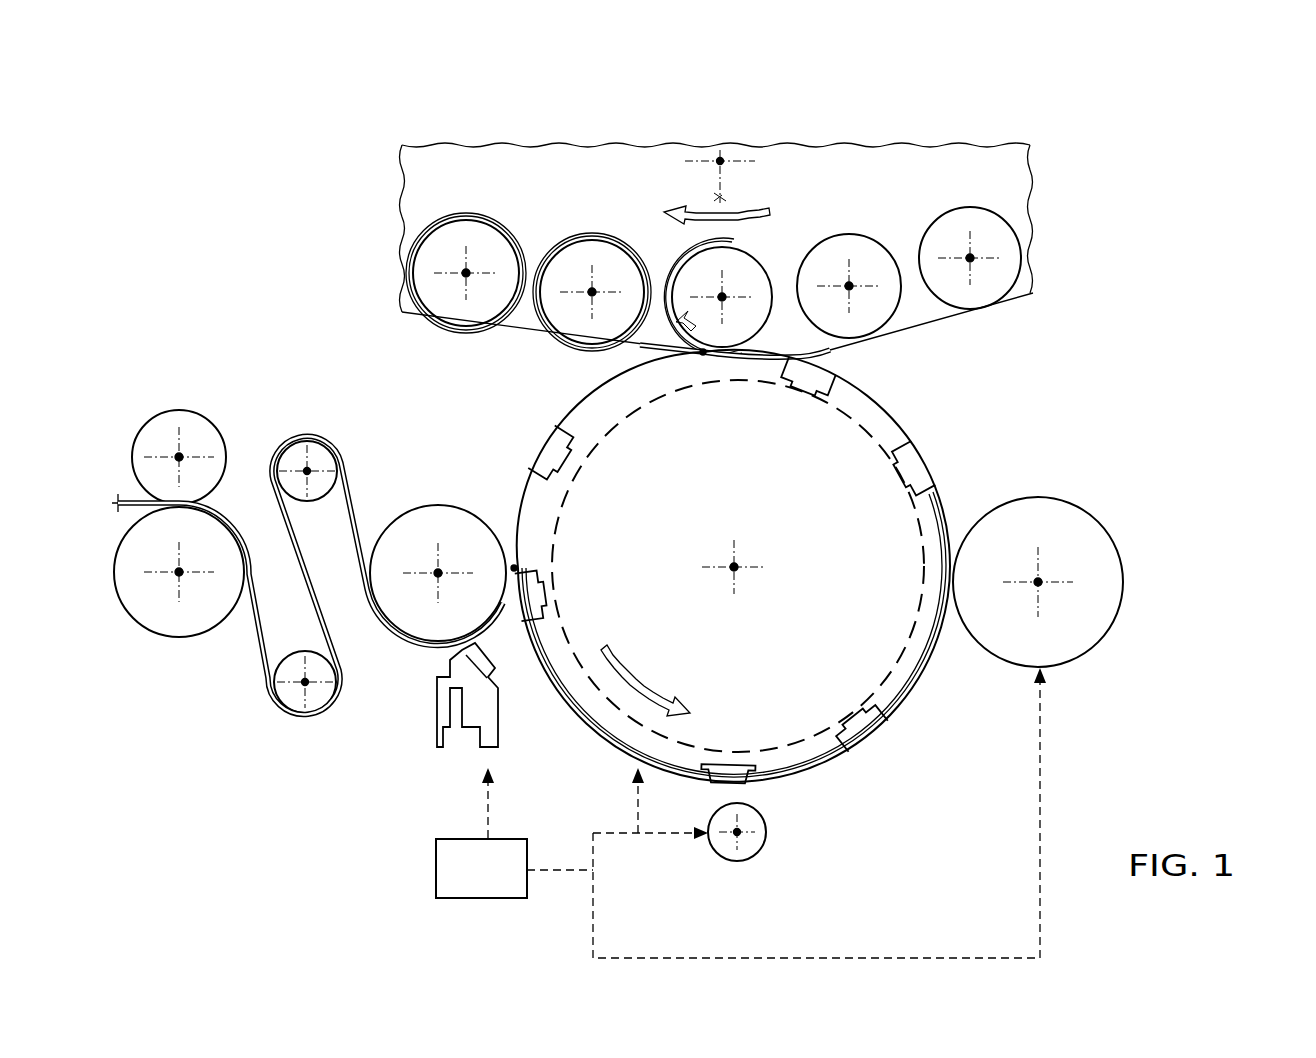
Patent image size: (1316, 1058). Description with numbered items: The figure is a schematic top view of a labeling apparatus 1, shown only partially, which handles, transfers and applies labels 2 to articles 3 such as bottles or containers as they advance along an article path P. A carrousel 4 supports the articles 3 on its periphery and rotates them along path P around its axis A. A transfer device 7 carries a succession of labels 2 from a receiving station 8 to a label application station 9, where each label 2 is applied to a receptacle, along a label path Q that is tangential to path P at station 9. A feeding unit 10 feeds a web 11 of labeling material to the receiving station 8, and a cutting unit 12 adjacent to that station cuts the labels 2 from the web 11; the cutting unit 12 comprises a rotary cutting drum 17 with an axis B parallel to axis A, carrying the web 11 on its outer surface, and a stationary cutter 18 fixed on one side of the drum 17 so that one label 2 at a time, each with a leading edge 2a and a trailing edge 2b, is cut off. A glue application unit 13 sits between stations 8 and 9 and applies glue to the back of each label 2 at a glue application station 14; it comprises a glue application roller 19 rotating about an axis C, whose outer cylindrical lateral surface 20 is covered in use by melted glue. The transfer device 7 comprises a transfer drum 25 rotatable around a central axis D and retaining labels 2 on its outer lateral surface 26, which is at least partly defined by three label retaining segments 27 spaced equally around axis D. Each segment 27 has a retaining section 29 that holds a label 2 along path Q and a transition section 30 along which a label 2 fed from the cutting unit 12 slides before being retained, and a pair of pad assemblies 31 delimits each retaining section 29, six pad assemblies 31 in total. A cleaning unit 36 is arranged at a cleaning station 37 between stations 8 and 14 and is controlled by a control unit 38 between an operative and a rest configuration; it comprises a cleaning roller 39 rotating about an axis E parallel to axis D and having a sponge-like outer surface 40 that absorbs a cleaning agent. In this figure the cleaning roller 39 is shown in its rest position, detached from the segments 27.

The labeling apparatus 1 is at (1198, 120).
The label 2 is at (428, 232).
The leading edge 2a is at (745, 255).
The trailing edge 2b is at (845, 357).
The article 3 is at (478, 255).
The carrousel 4 is at (997, 172).
The transfer device 7 is at (935, 725).
The receiving station 8 is at (514, 562).
The label application station 9 is at (698, 353).
The feeding unit 10 is at (162, 658).
The web 11 is at (268, 648).
The cutting unit 12 is at (405, 690).
The glue application unit 13 is at (1088, 490).
The glue application station 14 is at (953, 600).
The rotary cutting drum 17 is at (395, 535).
The stationary cutter blade 18 is at (435, 705).
The glue application roller 19 is at (1108, 548).
The outer cylindrical lateral surface 20 is at (1126, 612).
The transfer drum 25 is at (578, 410).
The outer lateral surface 26 is at (835, 765).
The label retaining segment 27 is at (955, 466).
The retaining section 29 is at (592, 405).
The transition section 30 is at (878, 398).
The pad assembly 31 is at (815, 375).
The cleaning unit 36 is at (746, 872).
The cleaning station 37 is at (722, 798).
The control unit 38 is at (480, 890).
The cleaning roller 39 is at (727, 848).
The sponge-like outer surface 40 is at (760, 848).
The axis of carrousel A is at (726, 158).
The axis of rotary cutting drum B is at (441, 568).
The axis of glue application roller C is at (1042, 575).
The central axis of transfer drum D is at (740, 566).
The rotation axis of cleaning roller E is at (745, 828).
The article path P is at (717, 201).
The label path Q is at (645, 680).